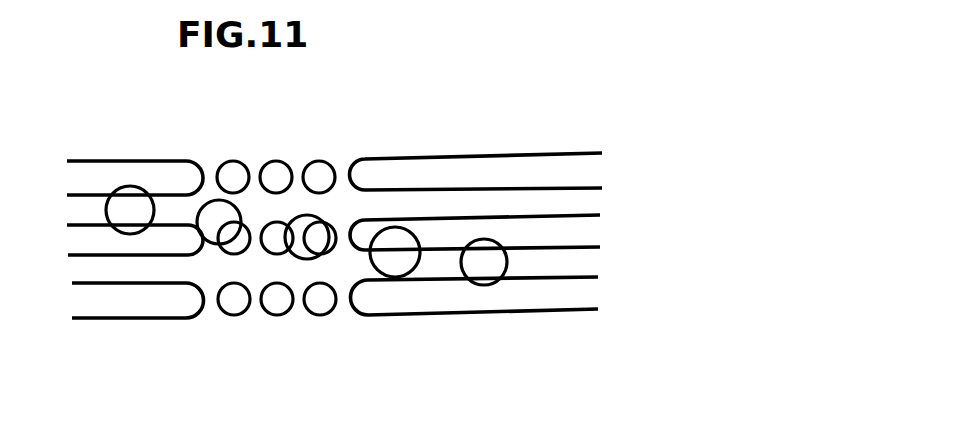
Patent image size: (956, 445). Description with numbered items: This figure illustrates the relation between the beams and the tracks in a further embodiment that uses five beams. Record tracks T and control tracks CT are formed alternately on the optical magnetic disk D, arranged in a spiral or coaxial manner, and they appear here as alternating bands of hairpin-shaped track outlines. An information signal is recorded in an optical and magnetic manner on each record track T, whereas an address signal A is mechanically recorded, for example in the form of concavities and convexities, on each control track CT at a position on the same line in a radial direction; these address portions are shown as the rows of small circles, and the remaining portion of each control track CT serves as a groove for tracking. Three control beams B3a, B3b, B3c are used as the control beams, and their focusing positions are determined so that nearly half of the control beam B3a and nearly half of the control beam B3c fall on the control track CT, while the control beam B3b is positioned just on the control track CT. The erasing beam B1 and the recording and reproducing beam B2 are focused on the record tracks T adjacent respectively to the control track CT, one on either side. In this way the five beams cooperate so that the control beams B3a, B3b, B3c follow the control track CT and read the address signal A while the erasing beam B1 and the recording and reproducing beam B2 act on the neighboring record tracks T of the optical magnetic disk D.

The erasing beam B1 is at (138, 202).
The recording and reproducing beam B2 is at (487, 284).
The control beam B3a is at (212, 212).
The control beam B3b is at (305, 222).
The control beam B3c is at (392, 268).
The record track T is at (82, 215).
The control track CT is at (597, 172).
The optical magnetic disk D is at (142, 325).
The address signal A is at (277, 318).